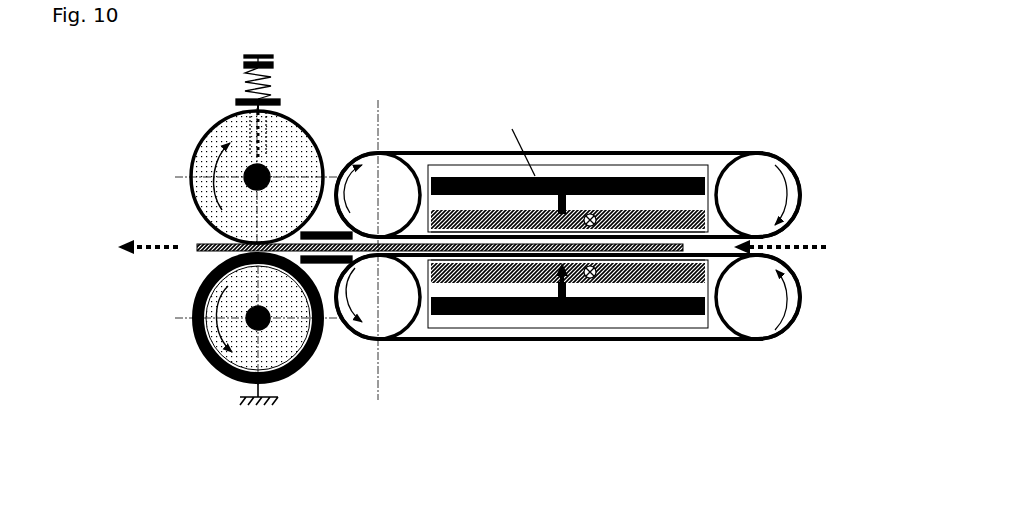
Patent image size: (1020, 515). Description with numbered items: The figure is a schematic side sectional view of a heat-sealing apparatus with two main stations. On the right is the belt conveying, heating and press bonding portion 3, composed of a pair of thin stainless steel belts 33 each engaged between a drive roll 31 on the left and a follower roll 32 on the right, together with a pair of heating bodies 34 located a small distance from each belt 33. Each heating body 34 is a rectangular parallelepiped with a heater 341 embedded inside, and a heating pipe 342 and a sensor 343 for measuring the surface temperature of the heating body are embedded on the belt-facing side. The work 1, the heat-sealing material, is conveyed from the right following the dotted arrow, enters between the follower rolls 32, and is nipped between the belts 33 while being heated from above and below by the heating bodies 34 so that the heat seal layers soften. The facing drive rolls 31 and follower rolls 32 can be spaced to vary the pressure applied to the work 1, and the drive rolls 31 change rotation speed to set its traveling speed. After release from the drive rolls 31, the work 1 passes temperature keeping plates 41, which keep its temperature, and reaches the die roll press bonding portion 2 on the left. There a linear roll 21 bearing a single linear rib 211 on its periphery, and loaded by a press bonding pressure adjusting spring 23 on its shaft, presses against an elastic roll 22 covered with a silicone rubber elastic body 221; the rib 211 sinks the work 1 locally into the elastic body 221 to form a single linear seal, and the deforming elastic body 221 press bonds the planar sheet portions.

The work 1 is at (690, 254).
The die roll press bonding portion 2 is at (258, 273).
The belt conveying, heating and press bonding portion 3 is at (530, 291).
The linear roll 21 is at (191, 173).
The single linear rib 211 is at (210, 122).
The elastic roll 22 is at (194, 328).
The elastic body 221 is at (207, 367).
The press bonding pressure adjusting spring 23 is at (279, 84).
The drive roll 31 is at (372, 149).
The follower roll 32 is at (772, 188).
The belt 33 is at (714, 150).
The heating body 34 is at (522, 327).
The heater 341 is at (582, 177).
The heating pipe 342 is at (645, 211).
The sensor 343 is at (602, 232).
The temperature keeping plate 41 is at (325, 265).